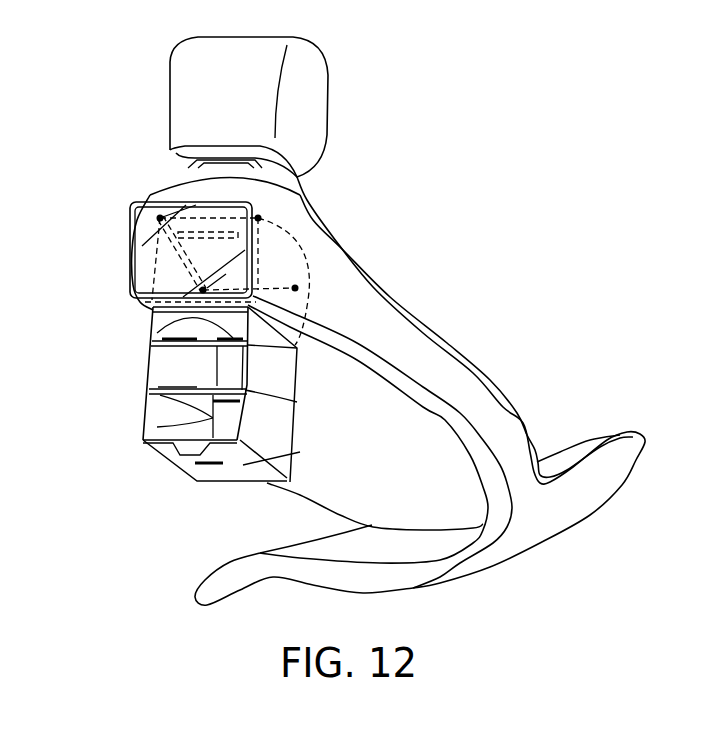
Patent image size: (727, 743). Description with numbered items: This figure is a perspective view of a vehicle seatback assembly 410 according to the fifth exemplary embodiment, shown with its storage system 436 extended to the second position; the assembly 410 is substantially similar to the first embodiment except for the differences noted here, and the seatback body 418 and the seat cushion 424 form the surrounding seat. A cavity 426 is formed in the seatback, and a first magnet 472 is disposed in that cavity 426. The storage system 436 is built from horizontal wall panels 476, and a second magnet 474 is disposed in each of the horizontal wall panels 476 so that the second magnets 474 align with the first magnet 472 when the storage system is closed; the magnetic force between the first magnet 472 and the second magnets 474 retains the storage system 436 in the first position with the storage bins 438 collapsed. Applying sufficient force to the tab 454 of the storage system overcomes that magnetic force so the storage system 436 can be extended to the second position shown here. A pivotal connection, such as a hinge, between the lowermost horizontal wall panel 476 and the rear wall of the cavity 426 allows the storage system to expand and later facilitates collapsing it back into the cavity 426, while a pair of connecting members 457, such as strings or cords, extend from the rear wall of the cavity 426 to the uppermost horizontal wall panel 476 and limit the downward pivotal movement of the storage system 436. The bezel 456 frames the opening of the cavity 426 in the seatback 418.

The vehicle seatback assembly 410 is at (504, 230).
The seat back 418 is at (493, 382).
The seat cushion 424 is at (327, 485).
The cavity 426 is at (263, 270).
The storage system 436 is at (142, 375).
The storage bins 438 is at (148, 348).
The tab 454 is at (172, 450).
The display bezel 456 is at (138, 228).
The connecting members 457 is at (200, 252).
The first magnet 472 is at (150, 190).
The second magnets 474 is at (153, 330).
The horizontal wall panels 476 is at (243, 392).